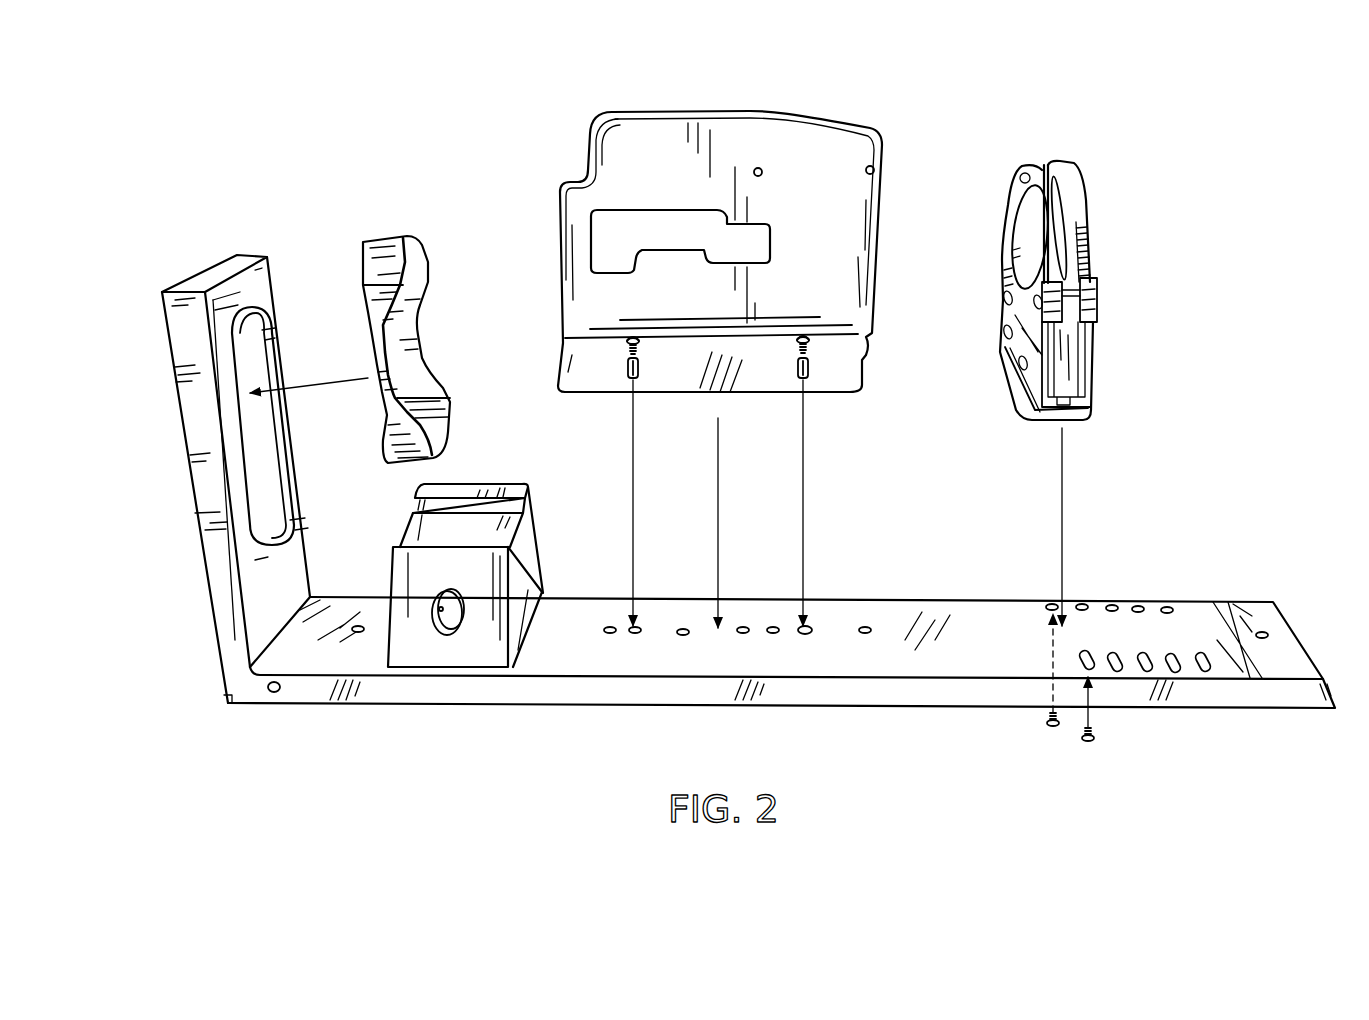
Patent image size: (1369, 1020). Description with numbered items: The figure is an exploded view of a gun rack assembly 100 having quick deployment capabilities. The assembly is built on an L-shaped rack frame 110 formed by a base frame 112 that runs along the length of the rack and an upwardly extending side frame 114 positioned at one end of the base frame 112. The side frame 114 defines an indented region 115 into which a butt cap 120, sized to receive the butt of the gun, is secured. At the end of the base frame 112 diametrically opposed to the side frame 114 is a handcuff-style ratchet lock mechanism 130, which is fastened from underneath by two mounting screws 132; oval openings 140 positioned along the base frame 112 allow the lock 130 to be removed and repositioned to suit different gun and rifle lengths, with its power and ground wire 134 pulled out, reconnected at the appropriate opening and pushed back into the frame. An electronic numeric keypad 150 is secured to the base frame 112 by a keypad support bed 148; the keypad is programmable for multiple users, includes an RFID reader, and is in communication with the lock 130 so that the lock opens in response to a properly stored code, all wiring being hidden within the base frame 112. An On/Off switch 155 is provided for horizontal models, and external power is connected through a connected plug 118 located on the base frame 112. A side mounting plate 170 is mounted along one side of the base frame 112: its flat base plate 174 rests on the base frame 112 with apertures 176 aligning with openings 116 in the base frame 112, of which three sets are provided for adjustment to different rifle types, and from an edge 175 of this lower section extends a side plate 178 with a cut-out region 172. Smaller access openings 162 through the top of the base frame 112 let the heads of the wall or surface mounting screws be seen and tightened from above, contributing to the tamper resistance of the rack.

The gun rack assembly 100 is at (412, 792).
The rack frame 110 is at (226, 701).
The base frame 112 is at (643, 698).
The side frame 114 is at (210, 583).
The indented region 115 is at (243, 345).
The openings 116 is at (807, 634).
The connected plug 118 is at (268, 690).
The butt cap 120 is at (380, 237).
The ratchet lock mechanism 130 is at (1100, 337).
The mounting screws 132 is at (1088, 741).
The power and ground wire 134 is at (1012, 390).
The openings 140 is at (1150, 670).
The keypad support bed 148 is at (510, 557).
The electronic numeric keypad 150 is at (470, 487).
The On/Off switch 155 is at (448, 630).
The access openings 162 is at (358, 626).
The side mounting plate 170 is at (790, 114).
The cut-out region 172 is at (607, 225).
The flat base plate 174 is at (873, 340).
The edge 175 is at (860, 323).
The apertures 176 is at (812, 370).
The side plate 178 is at (853, 223).